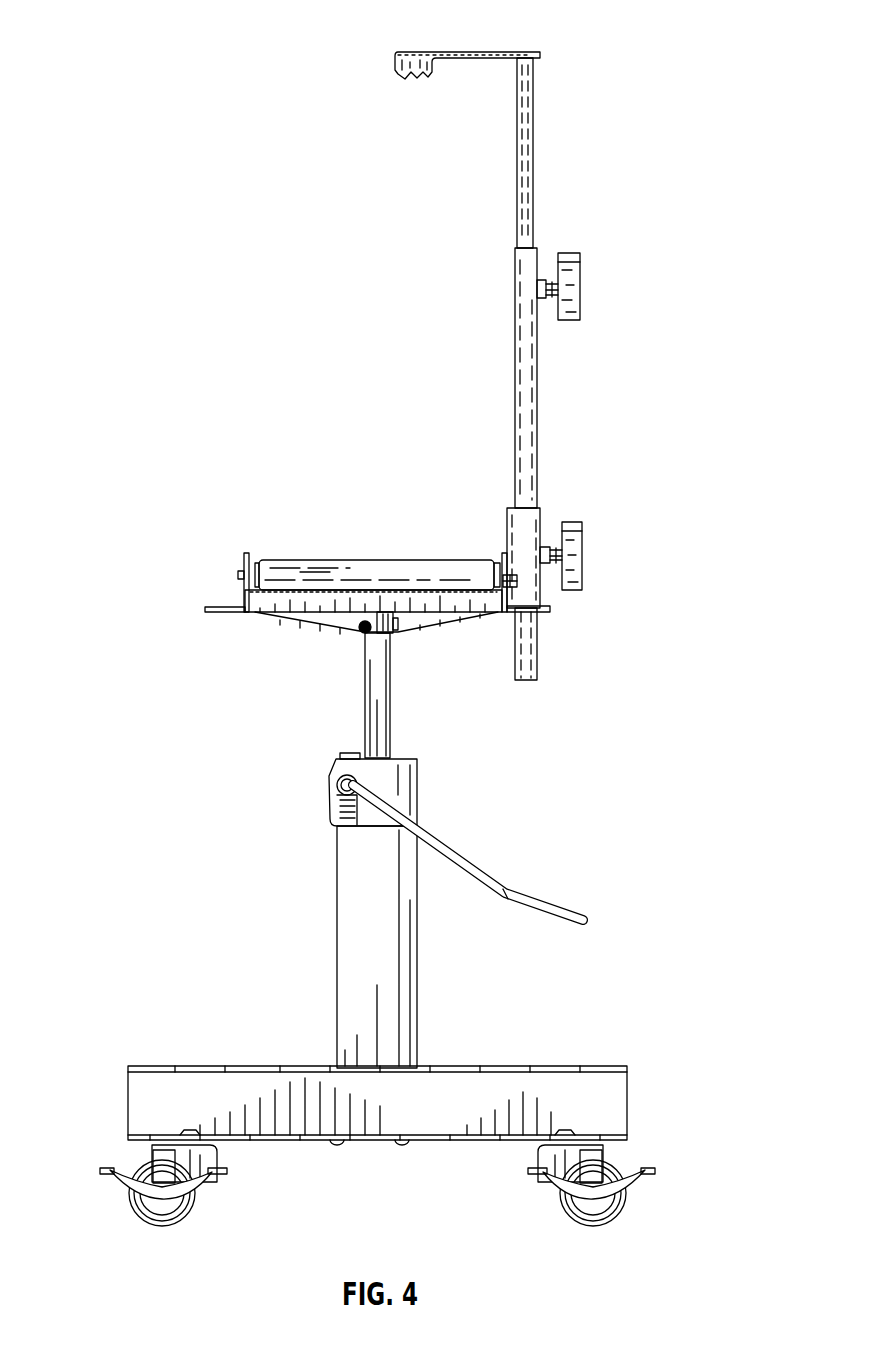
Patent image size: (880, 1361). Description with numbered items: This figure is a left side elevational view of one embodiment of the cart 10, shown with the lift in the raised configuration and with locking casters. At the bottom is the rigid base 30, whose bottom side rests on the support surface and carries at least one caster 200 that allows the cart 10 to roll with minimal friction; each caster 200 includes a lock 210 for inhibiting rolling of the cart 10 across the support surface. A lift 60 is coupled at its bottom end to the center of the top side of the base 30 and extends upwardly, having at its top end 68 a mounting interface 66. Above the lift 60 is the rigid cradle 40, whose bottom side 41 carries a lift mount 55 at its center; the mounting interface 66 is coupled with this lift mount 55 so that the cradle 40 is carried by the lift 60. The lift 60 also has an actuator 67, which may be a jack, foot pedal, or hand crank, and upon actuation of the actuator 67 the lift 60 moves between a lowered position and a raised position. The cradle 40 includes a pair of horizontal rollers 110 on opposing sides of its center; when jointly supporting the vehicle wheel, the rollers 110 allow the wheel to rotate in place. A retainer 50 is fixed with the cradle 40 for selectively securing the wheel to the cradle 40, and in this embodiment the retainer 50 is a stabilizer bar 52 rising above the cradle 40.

The cart 10 is at (370, 32).
The rigid base 30 is at (652, 1142).
The rigid cradle 40 is at (208, 609).
The bottom side 41 is at (255, 614).
The retainer 50 is at (521, 56).
The stabilizer bar 52 is at (467, 65).
The lift mount 55 is at (394, 638).
The lift 60 is at (330, 818).
The mounting interface 66 is at (390, 656).
The actuator 67 is at (470, 858).
The top end 68 is at (360, 631).
The horizontal rollers 110 is at (313, 558).
The caster 200 is at (122, 1195).
The lock 210 is at (196, 1195).